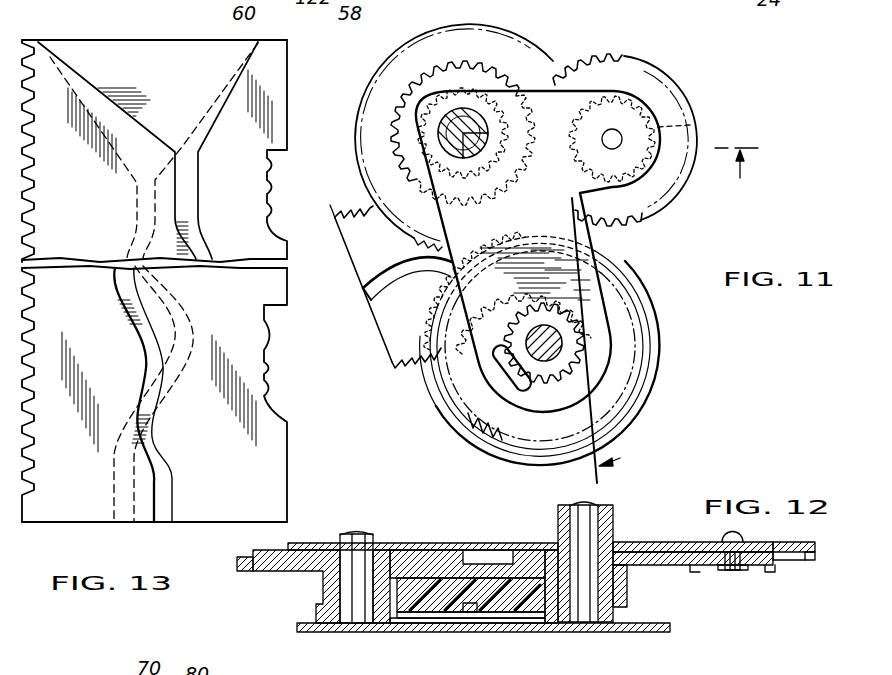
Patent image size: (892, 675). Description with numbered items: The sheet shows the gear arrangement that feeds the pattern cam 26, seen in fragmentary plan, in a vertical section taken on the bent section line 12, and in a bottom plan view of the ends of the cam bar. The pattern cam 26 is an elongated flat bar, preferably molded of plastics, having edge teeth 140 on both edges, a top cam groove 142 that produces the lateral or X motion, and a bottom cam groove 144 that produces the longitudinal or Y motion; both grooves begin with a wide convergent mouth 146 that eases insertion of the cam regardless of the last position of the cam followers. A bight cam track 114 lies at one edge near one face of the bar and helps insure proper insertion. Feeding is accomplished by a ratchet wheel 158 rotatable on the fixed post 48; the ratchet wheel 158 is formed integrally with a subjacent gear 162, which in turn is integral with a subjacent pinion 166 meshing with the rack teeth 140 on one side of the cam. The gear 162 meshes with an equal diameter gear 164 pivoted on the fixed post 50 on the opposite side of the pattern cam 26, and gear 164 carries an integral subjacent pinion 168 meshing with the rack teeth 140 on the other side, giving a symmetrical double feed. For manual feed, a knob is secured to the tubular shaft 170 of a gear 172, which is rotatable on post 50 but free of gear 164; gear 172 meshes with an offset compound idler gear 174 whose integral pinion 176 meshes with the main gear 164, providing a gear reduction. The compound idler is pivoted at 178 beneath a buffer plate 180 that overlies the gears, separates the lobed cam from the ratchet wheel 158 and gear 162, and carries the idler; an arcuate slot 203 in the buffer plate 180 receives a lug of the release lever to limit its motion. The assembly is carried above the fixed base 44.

In FIG. 11, the section line 12 is at (668, 315).
In FIG. 13, the pattern cam 26 is at (106, 249).
In FIG. 11, the pattern cam 26 is at (392, 337).
In FIG. 12, the pattern cam 26 is at (483, 613).
In FIG. 12, the fixed base 44 is at (640, 632).
In FIG. 11, the fixed post 48 is at (560, 352).
In FIG. 12, the fixed post 48 is at (367, 533).
In FIG. 11, the fixed post 50 is at (452, 112).
In FIG. 12, the fixed post 50 is at (578, 513).
In FIG. 13, the bight cam track 114 is at (282, 137).
In FIG. 11, the bight cam track 114 is at (348, 208).
In FIG. 12, the bight cam track 114 is at (552, 625).
In FIG. 13, the edge teeth 140 is at (23, 40).
In FIG. 11, the edge teeth 140 is at (337, 219).
In FIG. 12, the edge teeth 140 is at (393, 610).
In FIG. 13, the top cam groove 142 is at (146, 200).
In FIG. 11, the top cam groove 142 is at (385, 268).
In FIG. 12, the top cam groove 142 is at (448, 582).
In FIG. 13, the bottom cam groove 144 is at (196, 189).
In FIG. 12, the bottom cam groove 144 is at (470, 613).
In FIG. 13, the convergent mouth 146 is at (90, 83).
In FIG. 11, the ratchet wheel 158 is at (468, 422).
In FIG. 12, the ratchet wheel 158 is at (477, 546).
In FIG. 11, the gear 162 is at (662, 338).
In FIG. 12, the gear 162 is at (237, 572).
In FIG. 11, the gear 164 is at (552, 62).
In FIG. 12, the gear 164 is at (662, 570).
In FIG. 11, the pinion 166 is at (605, 330).
In FIG. 12, the pinion 166 is at (322, 595).
In FIG. 11, the pinion 168 is at (410, 170).
In FIG. 12, the pinion 168 is at (625, 595).
In FIG. 11, the tubular shaft 170 is at (440, 120).
In FIG. 12, the tubular shaft 170 is at (615, 515).
In FIG. 11, the gear 172 is at (455, 109).
In FIG. 12, the gear 172 is at (640, 548).
In FIG. 11, the idler gear 174 is at (614, 58).
In FIG. 12, the idler gear 174 is at (817, 558).
In FIG. 11, the pinion 176 is at (694, 117).
In FIG. 12, the pinion 176 is at (770, 570).
In FIG. 11, the pivot 178 is at (617, 126).
In FIG. 12, the pivot 178 is at (747, 577).
In FIG. 11, the buffer plate 180 is at (487, 373).
In FIG. 12, the buffer plate 180 is at (427, 544).
In FIG. 11, the arcuate slot 203 is at (516, 388).